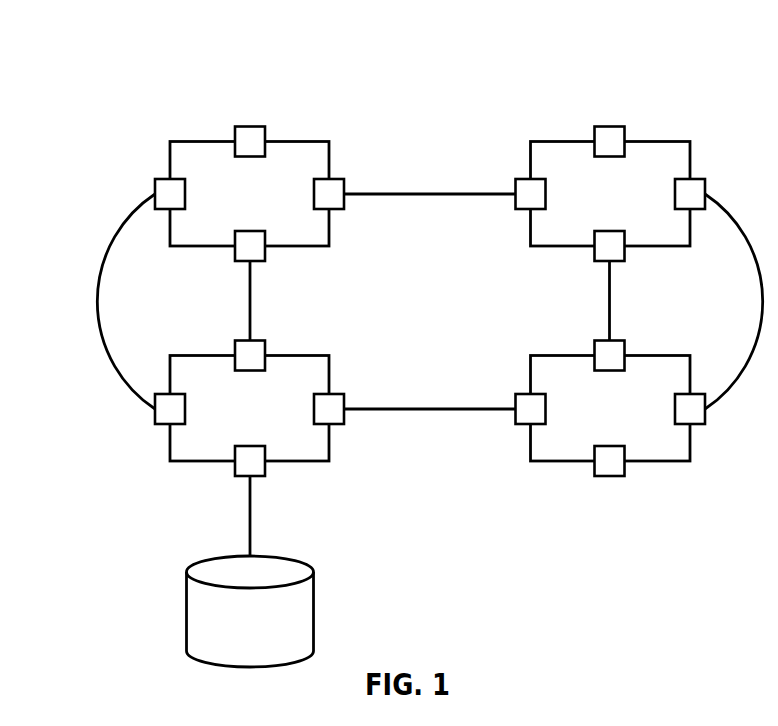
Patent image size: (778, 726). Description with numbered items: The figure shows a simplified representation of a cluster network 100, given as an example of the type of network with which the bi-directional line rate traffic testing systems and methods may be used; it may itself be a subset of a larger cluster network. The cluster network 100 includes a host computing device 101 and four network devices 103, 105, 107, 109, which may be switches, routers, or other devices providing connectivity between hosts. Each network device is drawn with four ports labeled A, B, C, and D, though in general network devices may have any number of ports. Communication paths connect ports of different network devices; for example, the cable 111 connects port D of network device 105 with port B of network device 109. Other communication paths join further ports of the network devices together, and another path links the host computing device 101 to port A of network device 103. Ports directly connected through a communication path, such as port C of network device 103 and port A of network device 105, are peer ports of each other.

The cluster network 100 is at (122, 66).
The host computing device 101 is at (187, 622).
The network device 103 is at (193, 461).
The network device 105 is at (207, 142).
The network device 107 is at (658, 461).
The network device 109 is at (652, 142).
The cable 111 is at (429, 194).